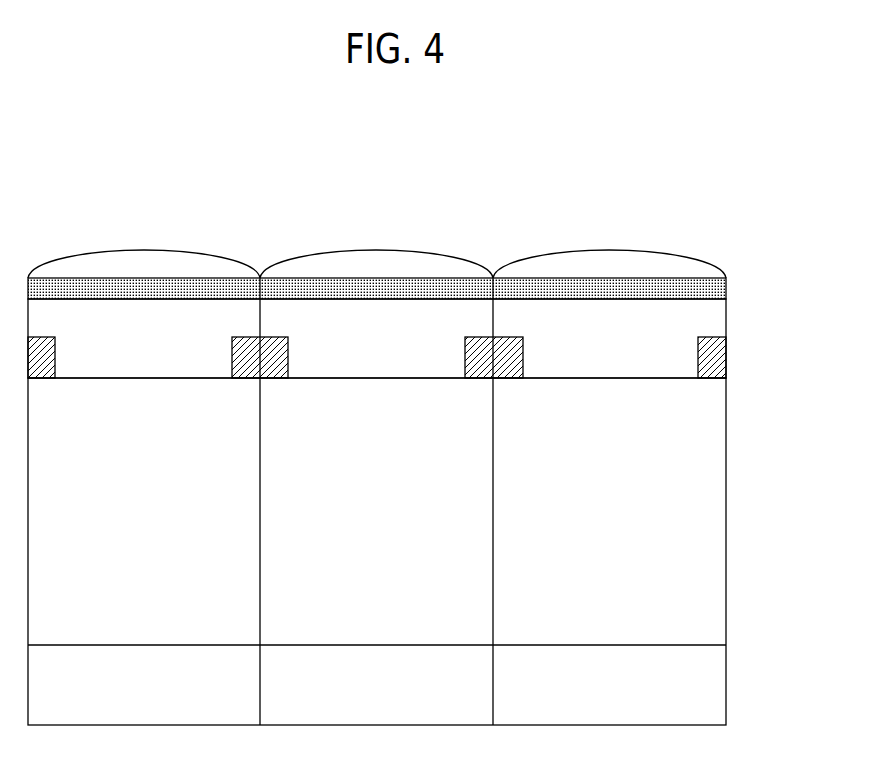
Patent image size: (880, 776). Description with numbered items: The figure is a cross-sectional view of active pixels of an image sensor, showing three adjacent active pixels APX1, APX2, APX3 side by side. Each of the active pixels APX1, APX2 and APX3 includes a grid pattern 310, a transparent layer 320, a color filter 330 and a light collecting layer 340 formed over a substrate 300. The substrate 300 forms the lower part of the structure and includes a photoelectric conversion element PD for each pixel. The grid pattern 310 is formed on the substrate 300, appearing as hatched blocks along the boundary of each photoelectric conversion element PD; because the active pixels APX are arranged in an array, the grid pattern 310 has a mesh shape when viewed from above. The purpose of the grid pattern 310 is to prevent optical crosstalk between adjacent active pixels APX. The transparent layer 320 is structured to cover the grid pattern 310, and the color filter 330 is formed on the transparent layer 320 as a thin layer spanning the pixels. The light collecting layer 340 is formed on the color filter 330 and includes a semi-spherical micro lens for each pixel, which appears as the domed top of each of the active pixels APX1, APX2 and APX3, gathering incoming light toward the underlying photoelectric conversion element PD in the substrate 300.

The substrate 300 is at (723, 678).
The grid pattern 310 is at (722, 355).
The transparent layer 320 is at (714, 320).
The color filter 330 is at (726, 288).
The light collecting layer 340 is at (695, 258).
The photoelectric conversion element PD is at (150, 525).
The active pixels APX is at (73, 158).
The first active pixel APX1 is at (176, 240).
The second active pixel APX2 is at (412, 237).
The third active pixel APX3 is at (641, 237).